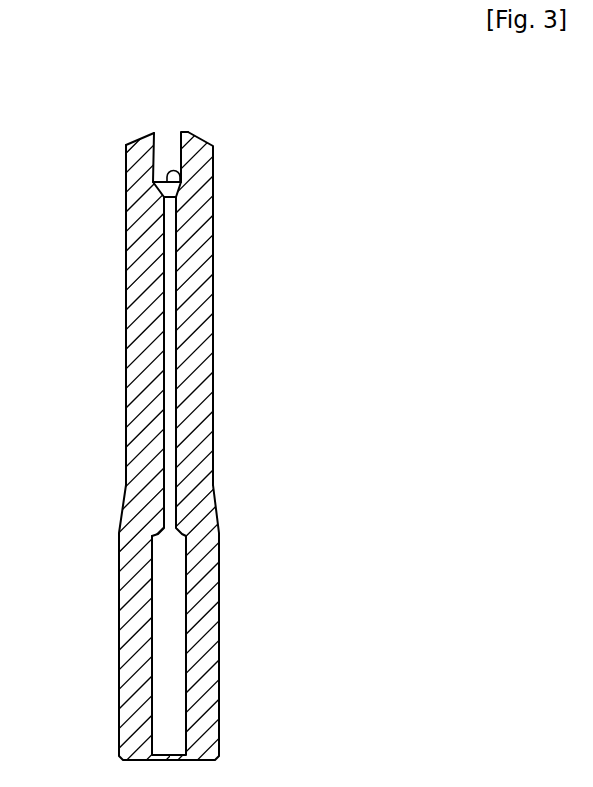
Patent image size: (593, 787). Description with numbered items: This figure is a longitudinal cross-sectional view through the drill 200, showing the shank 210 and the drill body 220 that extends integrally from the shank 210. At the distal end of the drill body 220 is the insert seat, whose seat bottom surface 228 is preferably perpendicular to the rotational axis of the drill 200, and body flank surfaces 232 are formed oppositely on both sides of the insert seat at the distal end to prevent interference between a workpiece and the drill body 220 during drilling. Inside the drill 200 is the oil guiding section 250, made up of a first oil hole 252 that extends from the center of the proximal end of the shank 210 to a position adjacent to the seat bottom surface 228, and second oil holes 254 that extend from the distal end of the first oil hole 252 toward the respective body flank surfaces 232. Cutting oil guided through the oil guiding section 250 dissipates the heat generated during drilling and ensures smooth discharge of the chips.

The drill 200 is at (118, 384).
The shank 210 is at (219, 619).
The drill body 220 is at (126, 273).
The seat bottom surface 228 is at (186, 173).
The body flank surfaces 232 is at (143, 139).
The oil guiding section 250 is at (142, 671).
The first oil hole 252 is at (173, 457).
The second oil holes 254 is at (127, 144).